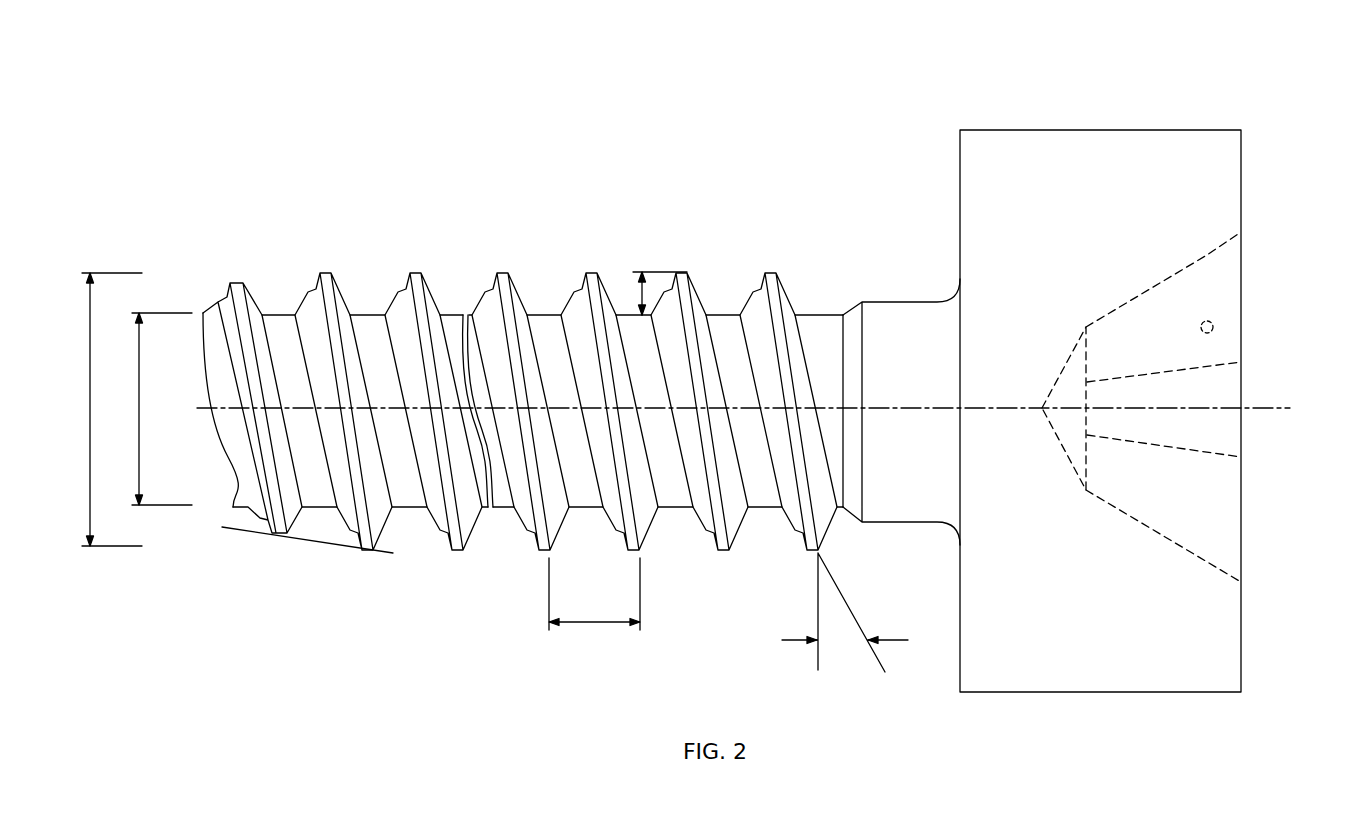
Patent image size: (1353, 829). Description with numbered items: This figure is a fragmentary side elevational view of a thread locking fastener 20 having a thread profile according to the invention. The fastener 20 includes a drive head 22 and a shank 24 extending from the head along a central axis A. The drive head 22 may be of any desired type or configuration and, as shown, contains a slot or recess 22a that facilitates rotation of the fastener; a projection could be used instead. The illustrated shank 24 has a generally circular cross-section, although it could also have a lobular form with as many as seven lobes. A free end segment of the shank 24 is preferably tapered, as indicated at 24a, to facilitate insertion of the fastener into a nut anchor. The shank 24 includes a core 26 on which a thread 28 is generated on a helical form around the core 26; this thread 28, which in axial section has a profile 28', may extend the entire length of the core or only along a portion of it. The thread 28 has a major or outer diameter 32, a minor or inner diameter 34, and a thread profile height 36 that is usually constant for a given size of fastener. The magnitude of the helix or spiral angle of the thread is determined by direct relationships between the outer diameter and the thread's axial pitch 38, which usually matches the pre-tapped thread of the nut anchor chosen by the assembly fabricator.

The thread locking fastener 20 is at (293, 615).
The drive head 22 is at (1112, 130).
The slot or recess 22a is at (1207, 255).
The shank 24 is at (812, 285).
The tapered free end segment 24a is at (292, 538).
The core 26 is at (818, 315).
The thread 28 is at (710, 385).
The thread profile 28' is at (512, 385).
The major or outer diameter 32 is at (95, 409).
The minor or inner diameter 34 is at (162, 409).
The thread profile height 36 is at (642, 292).
The axial pitch 38 is at (594, 608).
The central axis A is at (1262, 408).